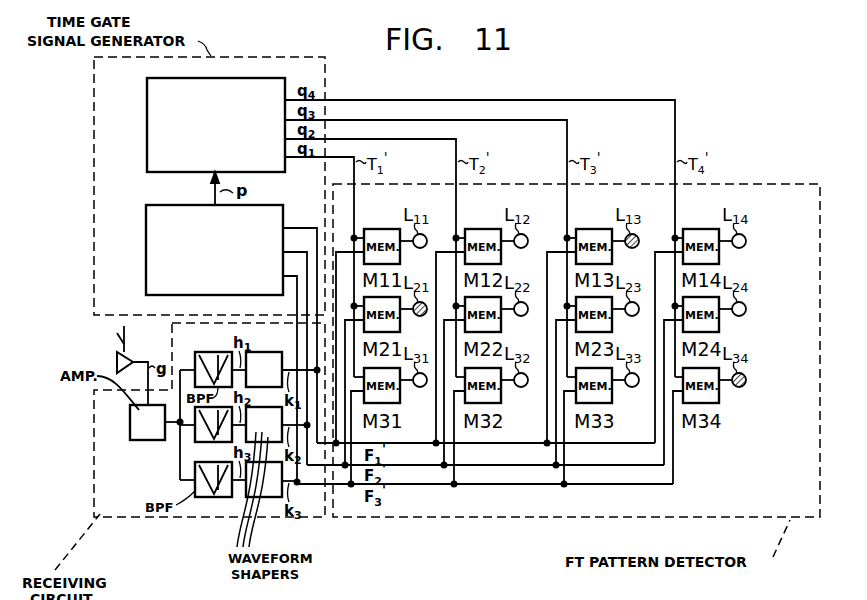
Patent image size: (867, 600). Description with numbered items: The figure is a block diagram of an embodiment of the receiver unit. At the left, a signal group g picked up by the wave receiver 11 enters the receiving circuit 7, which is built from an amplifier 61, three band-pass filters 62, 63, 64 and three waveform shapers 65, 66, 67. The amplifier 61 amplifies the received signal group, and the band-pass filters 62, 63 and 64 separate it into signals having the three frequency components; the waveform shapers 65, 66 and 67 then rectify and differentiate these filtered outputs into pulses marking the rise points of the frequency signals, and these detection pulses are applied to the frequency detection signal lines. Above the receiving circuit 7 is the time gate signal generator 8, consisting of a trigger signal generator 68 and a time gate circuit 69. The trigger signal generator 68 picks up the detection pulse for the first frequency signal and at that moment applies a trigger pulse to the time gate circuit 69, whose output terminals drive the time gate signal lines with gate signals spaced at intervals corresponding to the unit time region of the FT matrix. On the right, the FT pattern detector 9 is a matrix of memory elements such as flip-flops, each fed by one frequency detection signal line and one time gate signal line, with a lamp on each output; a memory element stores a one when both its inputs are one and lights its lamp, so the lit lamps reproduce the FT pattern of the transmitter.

The receiving circuit 7 is at (146, 517).
The time gate signal generator 8 is at (259, 57).
The FT pattern detector 9 is at (598, 518).
The wave receiver 11 is at (135, 338).
The amplifier 61 is at (130, 423).
The band-pass filter 62 is at (216, 344).
The band-pass filter 63 is at (200, 430).
The band-pass filter 64 is at (206, 497).
The waveform shaper 65 is at (257, 352).
The waveform shaper 66 is at (247, 441).
The waveform shaper 67 is at (265, 497).
The trigger signal generator 68 is at (146, 255).
The time gate circuit 69 is at (147, 126).